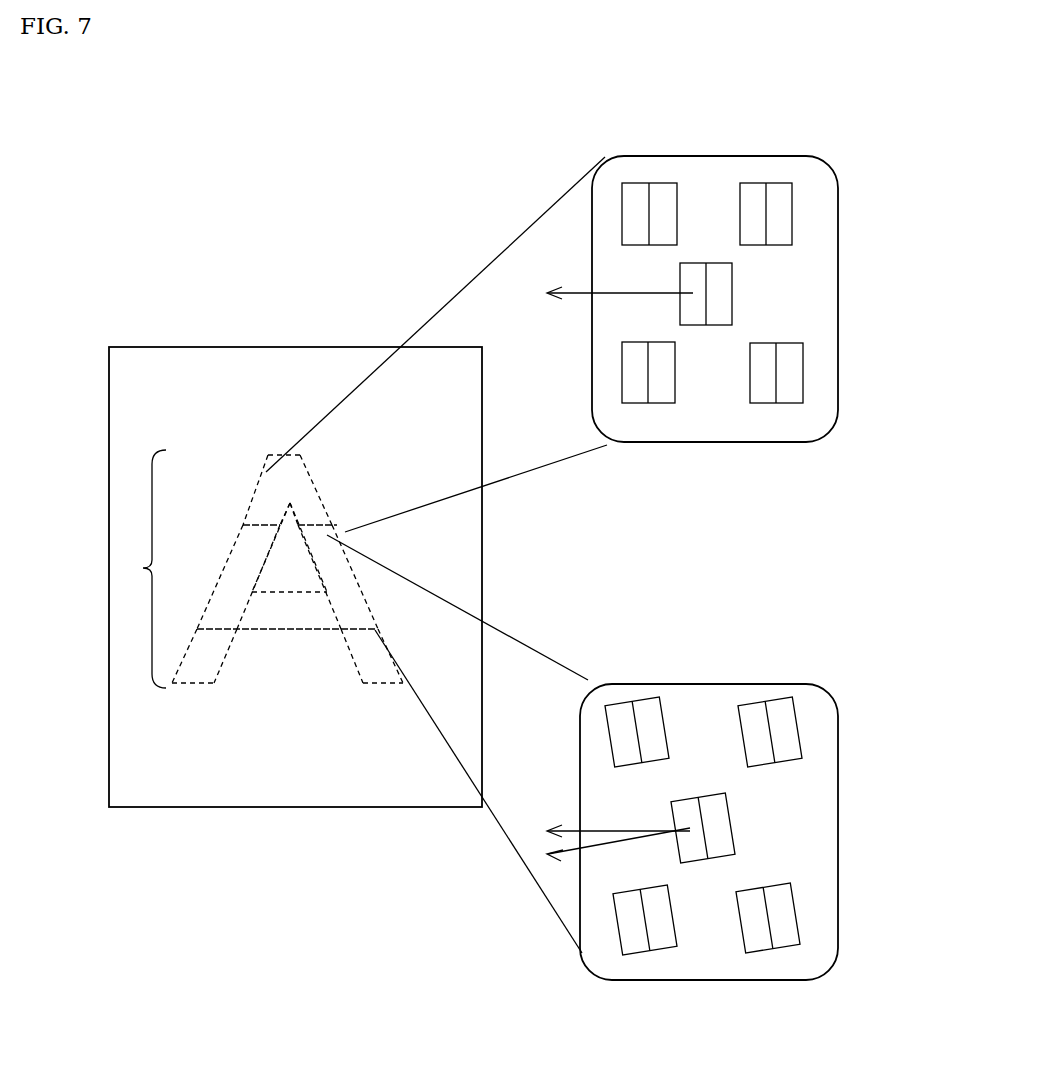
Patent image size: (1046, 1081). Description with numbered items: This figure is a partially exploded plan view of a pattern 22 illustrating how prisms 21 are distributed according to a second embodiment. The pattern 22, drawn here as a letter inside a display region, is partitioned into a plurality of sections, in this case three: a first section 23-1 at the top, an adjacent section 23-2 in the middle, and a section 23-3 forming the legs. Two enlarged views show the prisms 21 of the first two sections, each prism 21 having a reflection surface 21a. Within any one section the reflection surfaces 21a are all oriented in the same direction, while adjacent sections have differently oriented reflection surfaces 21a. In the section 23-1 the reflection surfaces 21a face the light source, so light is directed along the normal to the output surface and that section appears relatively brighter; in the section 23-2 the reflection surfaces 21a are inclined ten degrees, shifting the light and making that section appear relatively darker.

The prism 21 is at (805, 392).
The reflection surface 21a is at (763, 392).
The pattern 22 is at (143, 568).
The section 23-1 is at (718, 156).
The section 23-2 is at (698, 685).
The section 23-3 is at (202, 670).